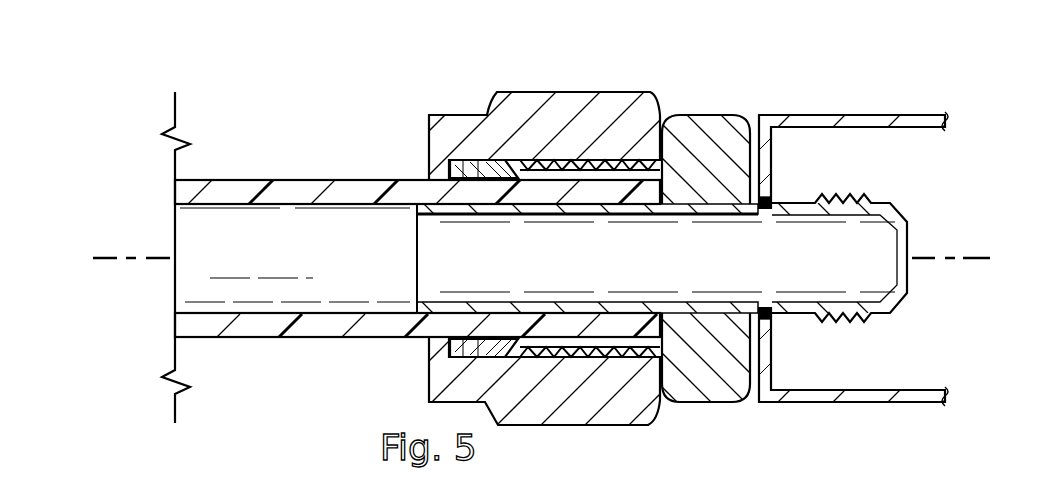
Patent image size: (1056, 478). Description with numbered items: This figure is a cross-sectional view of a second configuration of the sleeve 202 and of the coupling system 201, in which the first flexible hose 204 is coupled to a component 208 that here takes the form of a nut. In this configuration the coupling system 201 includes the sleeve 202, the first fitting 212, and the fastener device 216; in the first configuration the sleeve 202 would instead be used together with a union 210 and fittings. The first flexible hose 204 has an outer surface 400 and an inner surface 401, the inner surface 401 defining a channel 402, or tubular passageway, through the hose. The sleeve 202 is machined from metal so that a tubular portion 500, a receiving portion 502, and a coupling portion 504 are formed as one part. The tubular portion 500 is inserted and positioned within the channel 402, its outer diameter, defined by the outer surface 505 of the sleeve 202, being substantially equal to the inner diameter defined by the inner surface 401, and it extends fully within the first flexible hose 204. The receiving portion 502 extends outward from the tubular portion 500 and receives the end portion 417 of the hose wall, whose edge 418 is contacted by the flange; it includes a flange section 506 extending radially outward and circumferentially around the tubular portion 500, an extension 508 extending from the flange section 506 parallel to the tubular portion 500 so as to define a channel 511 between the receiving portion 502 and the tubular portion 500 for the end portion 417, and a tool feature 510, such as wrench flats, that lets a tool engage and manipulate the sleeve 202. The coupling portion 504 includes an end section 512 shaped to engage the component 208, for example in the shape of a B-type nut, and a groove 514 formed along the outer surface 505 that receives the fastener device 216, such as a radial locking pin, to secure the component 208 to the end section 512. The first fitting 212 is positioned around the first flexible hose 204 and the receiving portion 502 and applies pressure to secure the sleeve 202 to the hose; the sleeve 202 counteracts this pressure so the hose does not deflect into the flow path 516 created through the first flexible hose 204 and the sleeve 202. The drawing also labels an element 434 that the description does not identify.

The coupling system 201 is at (829, 55).
The sleeve 202 is at (699, 120).
The first flexible hose 204 is at (238, 176).
The component 208 is at (861, 123).
The union 210 is at (590, 100).
The first fitting 212 is at (512, 88).
The fastener device 216 is at (764, 322).
The outer surface 400 is at (299, 180).
The inner surface 401 is at (288, 205).
The channel 402 is at (201, 241).
The end portion 417 is at (647, 212).
The edge 418 is at (653, 206).
The ferrule ring 434 is at (481, 157).
The tubular portion 500 is at (543, 222).
The receiving portion 502 is at (714, 406).
The coupling portion 504 is at (859, 210).
The outer surface 505 is at (439, 320).
The flange section 506 is at (723, 151).
The extension 508 is at (577, 342).
The tool feature 510 is at (671, 108).
The channel 511 is at (597, 191).
The end section 512 is at (900, 189).
The groove 514 is at (765, 304).
The flow path 516 is at (403, 269).